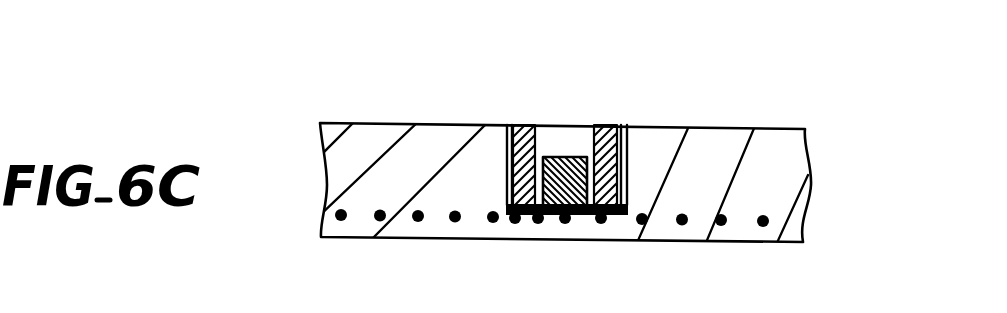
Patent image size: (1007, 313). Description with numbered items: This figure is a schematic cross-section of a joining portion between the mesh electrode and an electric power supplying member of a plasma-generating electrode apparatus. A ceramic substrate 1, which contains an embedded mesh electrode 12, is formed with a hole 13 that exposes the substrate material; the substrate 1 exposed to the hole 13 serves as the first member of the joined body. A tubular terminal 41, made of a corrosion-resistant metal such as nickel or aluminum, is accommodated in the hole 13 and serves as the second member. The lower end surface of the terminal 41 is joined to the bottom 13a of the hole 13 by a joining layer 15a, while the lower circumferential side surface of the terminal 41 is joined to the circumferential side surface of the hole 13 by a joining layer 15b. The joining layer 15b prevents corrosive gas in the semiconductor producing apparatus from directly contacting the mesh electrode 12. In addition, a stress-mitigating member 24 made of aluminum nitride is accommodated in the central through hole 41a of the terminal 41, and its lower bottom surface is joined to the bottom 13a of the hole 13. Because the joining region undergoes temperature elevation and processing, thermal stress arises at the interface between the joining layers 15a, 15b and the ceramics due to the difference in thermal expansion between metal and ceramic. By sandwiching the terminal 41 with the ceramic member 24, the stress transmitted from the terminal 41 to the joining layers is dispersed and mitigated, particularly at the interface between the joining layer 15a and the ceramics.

The substrate 1 is at (794, 183).
The mesh electrode 12 is at (684, 222).
The hole 13 is at (507, 151).
The bottom 13a is at (567, 222).
The joining layer 15a is at (545, 222).
The joining layer 15b is at (629, 191).
The stress-mitigating member 24 is at (561, 157).
The tubular terminal 41 is at (611, 119).
The through hole 41a is at (591, 144).